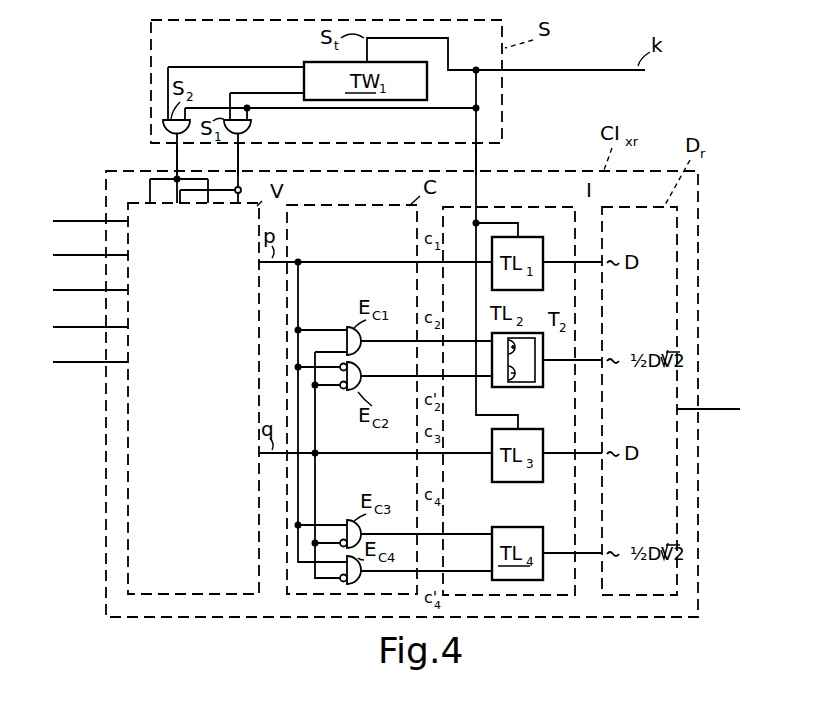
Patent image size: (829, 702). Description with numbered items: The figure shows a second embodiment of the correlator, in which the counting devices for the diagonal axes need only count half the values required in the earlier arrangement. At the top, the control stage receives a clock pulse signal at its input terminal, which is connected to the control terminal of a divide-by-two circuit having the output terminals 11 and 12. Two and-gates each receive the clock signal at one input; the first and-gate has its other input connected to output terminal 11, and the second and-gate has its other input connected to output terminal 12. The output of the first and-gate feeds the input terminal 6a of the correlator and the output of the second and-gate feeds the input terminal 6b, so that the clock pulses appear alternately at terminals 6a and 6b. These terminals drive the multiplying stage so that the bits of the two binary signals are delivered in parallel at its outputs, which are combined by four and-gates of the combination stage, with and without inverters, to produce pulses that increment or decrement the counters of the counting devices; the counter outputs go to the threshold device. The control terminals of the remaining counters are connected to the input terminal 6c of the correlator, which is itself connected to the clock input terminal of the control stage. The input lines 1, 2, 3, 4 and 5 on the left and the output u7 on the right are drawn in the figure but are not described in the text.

The first input line 1 is at (55, 218).
The second input line 2 is at (56, 252).
The third input line 3 is at (56, 287).
The fourth input line 4 is at (56, 324).
The fifth input line 5 is at (56, 359).
The input terminal of the correlator 6a is at (243, 160).
The input terminal of the correlator 6b is at (172, 160).
The input terminal of the correlator 6c is at (481, 162).
The output terminal of the divide-by-two circuit 11 is at (284, 97).
The output terminal of the divide-by-two circuit 12 is at (280, 64).
The output of rotary switch Dr u7 is at (708, 428).